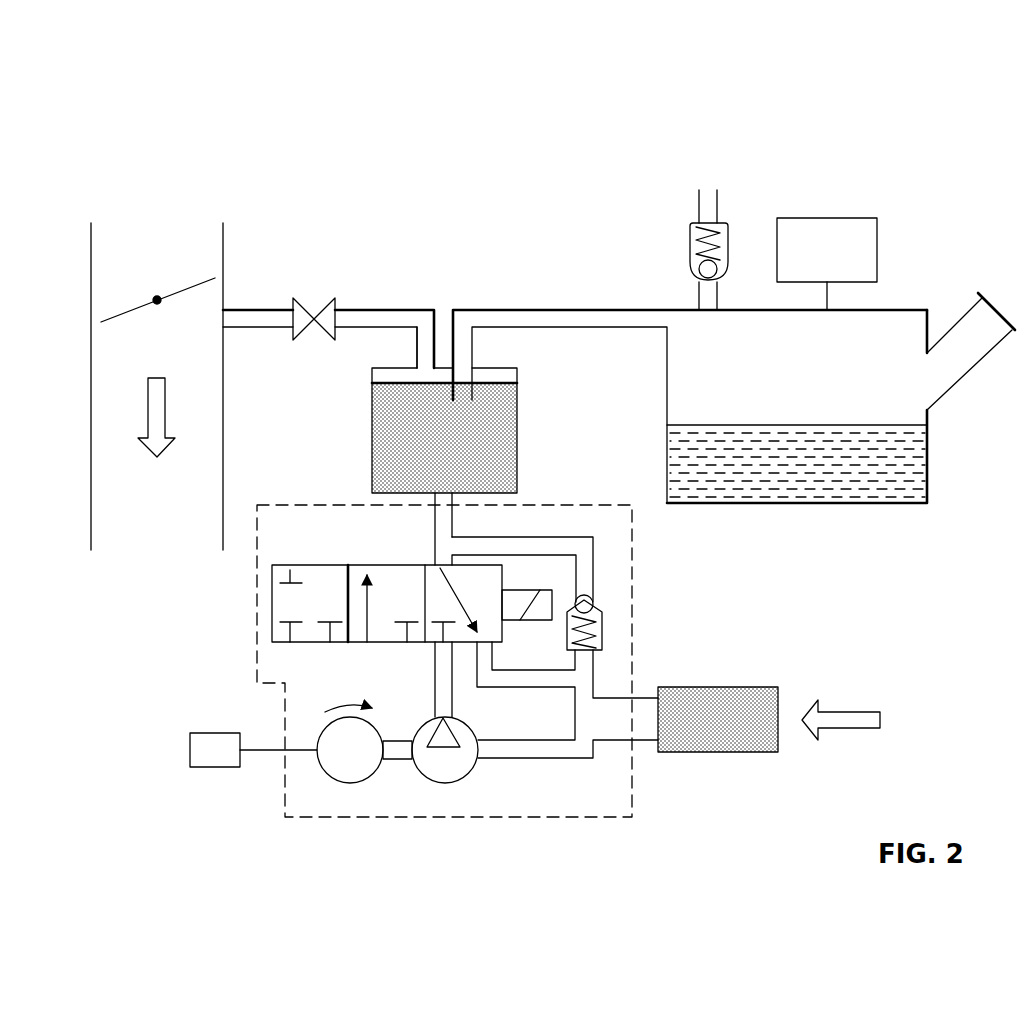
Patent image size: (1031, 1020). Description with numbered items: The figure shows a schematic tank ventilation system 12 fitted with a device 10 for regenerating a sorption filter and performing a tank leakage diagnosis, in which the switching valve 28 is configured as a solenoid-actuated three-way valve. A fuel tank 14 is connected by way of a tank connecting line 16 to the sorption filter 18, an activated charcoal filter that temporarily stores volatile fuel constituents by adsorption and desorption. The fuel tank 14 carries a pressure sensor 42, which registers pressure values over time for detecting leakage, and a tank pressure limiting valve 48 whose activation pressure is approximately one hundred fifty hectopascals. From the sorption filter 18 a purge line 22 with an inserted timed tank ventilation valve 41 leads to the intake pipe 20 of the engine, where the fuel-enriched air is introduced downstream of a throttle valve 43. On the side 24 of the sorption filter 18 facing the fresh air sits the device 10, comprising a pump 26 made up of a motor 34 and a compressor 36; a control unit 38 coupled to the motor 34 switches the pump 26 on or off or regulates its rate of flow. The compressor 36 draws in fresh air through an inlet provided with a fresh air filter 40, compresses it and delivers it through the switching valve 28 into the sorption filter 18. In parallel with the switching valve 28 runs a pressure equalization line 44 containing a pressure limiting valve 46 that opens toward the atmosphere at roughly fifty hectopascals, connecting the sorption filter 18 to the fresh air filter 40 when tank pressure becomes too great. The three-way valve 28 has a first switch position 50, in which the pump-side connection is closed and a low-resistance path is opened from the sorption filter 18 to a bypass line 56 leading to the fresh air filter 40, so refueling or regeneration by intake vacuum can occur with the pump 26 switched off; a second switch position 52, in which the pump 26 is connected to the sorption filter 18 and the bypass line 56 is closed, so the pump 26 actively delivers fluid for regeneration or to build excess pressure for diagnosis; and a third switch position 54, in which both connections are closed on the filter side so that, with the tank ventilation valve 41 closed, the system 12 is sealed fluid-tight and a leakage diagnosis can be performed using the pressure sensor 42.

The device 10 is at (236, 672).
The tank ventilation system 12 is at (866, 157).
The fuel tank 14 is at (887, 390).
The tank connecting line 16 is at (540, 318).
The sorption filter 18 is at (490, 436).
The intake pipe 20 is at (120, 402).
The purge line 22 is at (257, 318).
The side facing the atmosphere 24 is at (407, 490).
The pump 26 is at (430, 757).
The switching valve 28 is at (361, 603).
The motor 34 is at (348, 770).
The compressor 36 is at (443, 770).
The control unit 38 is at (217, 752).
The fresh air filter 40 is at (727, 713).
The tank ventilation valve 41 is at (326, 318).
The pressure sensor 42 is at (848, 247).
The throttle valve 43 is at (127, 310).
The pressure equalization line 44 is at (588, 573).
The pressure limiting valve 46 is at (600, 630).
The tank pressure limiting valve 48 is at (693, 243).
The first switch position 50 is at (495, 600).
The second switch position 52 is at (418, 600).
The third switch position 54 is at (341, 600).
The bypass line 56 is at (533, 680).